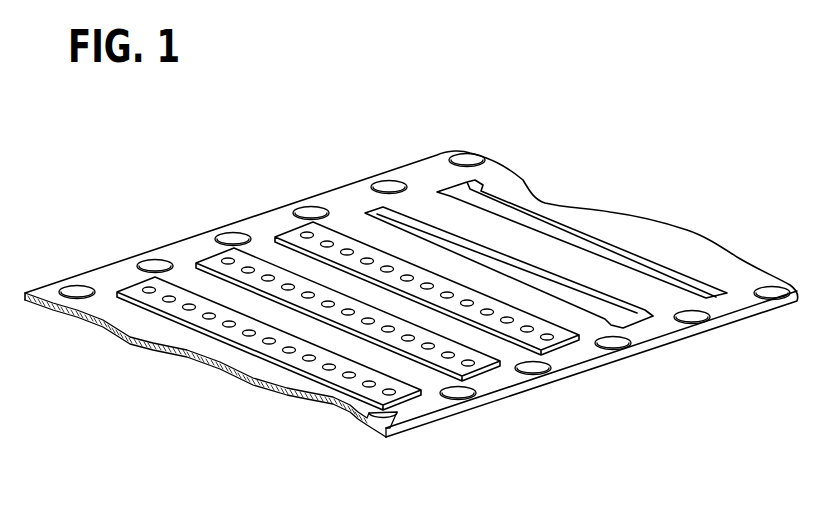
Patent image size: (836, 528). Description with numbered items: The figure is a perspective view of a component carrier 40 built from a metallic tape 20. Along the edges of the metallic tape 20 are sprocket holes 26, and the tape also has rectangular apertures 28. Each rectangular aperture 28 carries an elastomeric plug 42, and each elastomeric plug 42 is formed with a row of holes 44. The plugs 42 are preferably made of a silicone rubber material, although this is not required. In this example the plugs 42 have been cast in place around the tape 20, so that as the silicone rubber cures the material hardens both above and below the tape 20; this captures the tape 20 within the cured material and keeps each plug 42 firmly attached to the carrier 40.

The component carrier 40 is at (86, 188).
The metallic tape 20 is at (192, 252).
The sprocket holes 26 is at (153, 264).
The rectangular apertures 28 is at (630, 325).
The elastomeric plugs 42 is at (411, 384).
The holes 44 is at (304, 232).